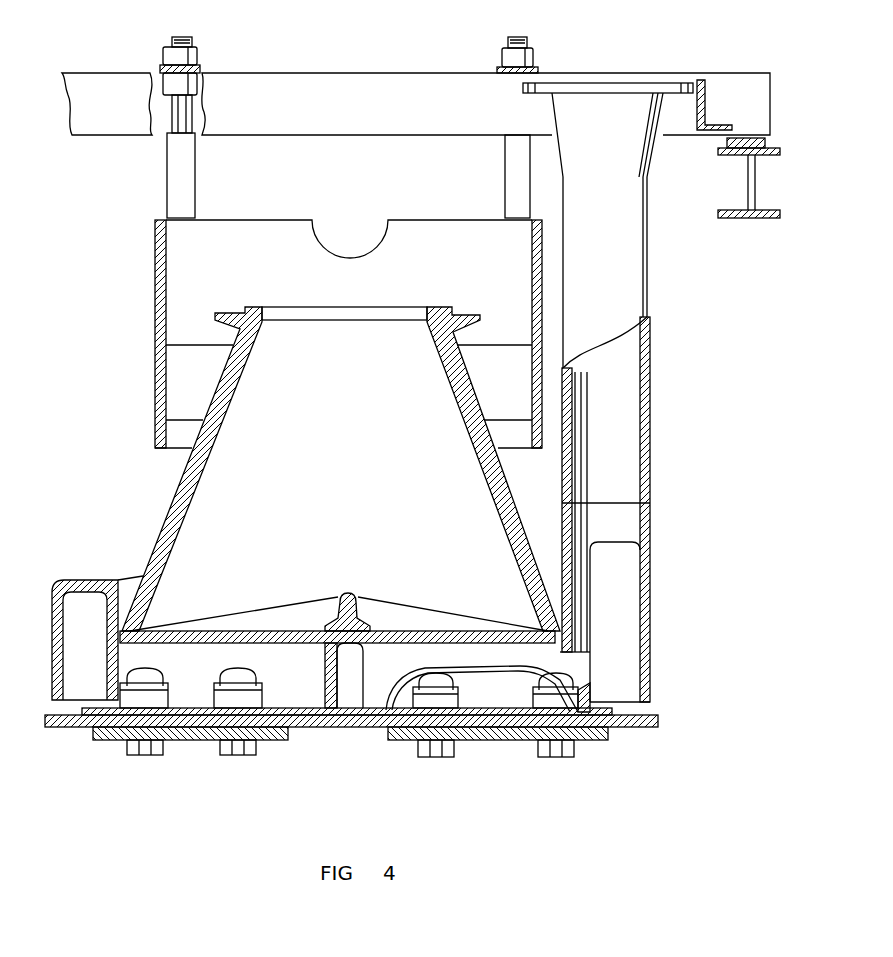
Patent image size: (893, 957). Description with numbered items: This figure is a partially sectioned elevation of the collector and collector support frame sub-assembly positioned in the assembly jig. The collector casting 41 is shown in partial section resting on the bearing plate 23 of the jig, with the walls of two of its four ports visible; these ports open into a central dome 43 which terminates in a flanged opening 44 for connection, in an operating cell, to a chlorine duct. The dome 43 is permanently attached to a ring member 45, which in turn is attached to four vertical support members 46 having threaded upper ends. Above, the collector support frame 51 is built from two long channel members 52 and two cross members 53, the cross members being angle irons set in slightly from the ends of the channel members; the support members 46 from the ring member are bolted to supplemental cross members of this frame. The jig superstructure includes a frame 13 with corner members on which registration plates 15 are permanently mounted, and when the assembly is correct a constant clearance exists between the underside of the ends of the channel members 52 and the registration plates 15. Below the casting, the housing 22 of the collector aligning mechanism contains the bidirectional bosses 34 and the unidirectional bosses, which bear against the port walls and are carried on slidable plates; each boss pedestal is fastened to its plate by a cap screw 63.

The channel member 52 is at (402, 115).
The collector support frame 51 is at (620, 70).
The cross member 53 is at (702, 90).
The registration plate 15 is at (768, 145).
The frame 13 is at (760, 194).
The vertical support member 46 is at (197, 192).
The ring member 45 is at (265, 253).
The flanged opening 44 is at (250, 308).
The central dome 43 is at (316, 513).
The collector casting 41 is at (160, 521).
The bearing plate 23 is at (270, 708).
The cap screw 63 is at (227, 752).
The bidirectional boss 34 is at (560, 676).
The housing 22 is at (658, 718).